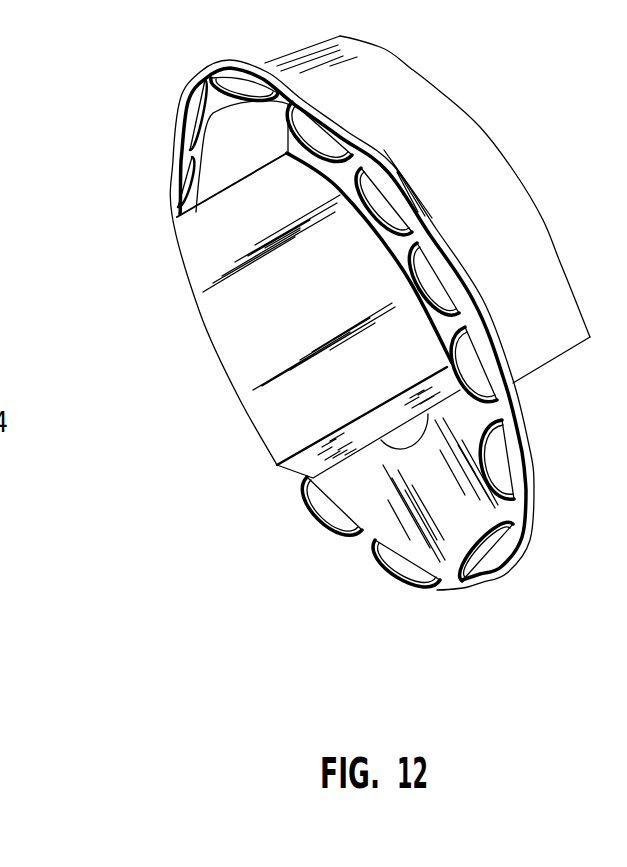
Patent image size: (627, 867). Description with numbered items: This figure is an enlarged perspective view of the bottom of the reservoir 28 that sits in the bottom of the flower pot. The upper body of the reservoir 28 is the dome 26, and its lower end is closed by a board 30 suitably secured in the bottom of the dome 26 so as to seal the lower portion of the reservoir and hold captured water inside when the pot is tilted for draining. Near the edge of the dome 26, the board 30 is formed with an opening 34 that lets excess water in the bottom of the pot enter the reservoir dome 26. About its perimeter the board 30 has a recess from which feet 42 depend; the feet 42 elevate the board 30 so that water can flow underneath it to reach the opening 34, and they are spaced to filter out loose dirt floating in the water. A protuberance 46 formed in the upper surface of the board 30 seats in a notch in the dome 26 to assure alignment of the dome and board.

The dome 26 is at (470, 136).
The reservoir 28 is at (540, 150).
The board 30 is at (443, 543).
The opening 34 is at (220, 160).
The feet 42 is at (390, 567).
The protuberance 46 is at (313, 444).